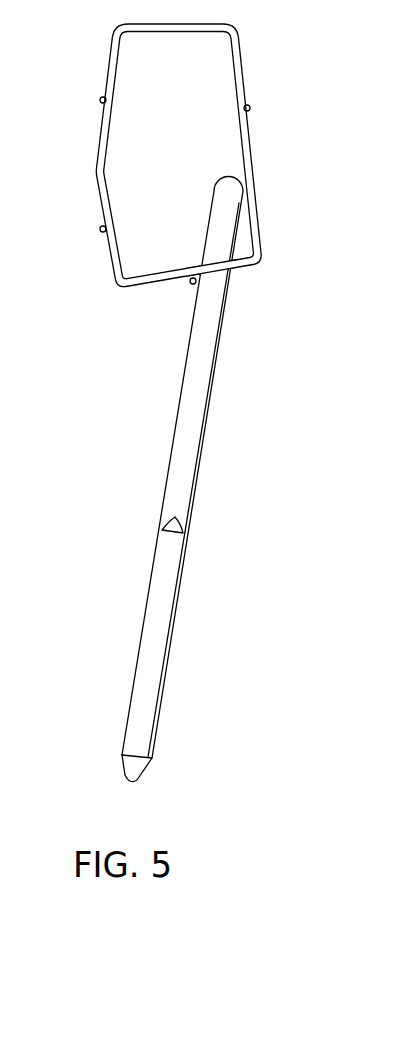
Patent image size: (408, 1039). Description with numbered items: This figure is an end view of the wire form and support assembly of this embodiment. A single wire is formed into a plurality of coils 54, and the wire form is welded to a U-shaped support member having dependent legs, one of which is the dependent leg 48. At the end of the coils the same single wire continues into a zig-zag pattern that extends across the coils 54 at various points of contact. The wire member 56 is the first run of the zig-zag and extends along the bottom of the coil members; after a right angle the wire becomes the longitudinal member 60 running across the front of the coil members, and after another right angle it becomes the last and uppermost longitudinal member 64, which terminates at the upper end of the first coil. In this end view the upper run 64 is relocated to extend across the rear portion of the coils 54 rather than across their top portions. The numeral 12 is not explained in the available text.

The handle 12 is at (184, 479).
The dependent leg 48 is at (170, 458).
The coils 54 is at (96, 161).
The wire member 56 is at (191, 284).
The longitudinal member 60 is at (100, 101).
The uppermost longitudinal member 64 is at (250, 108).